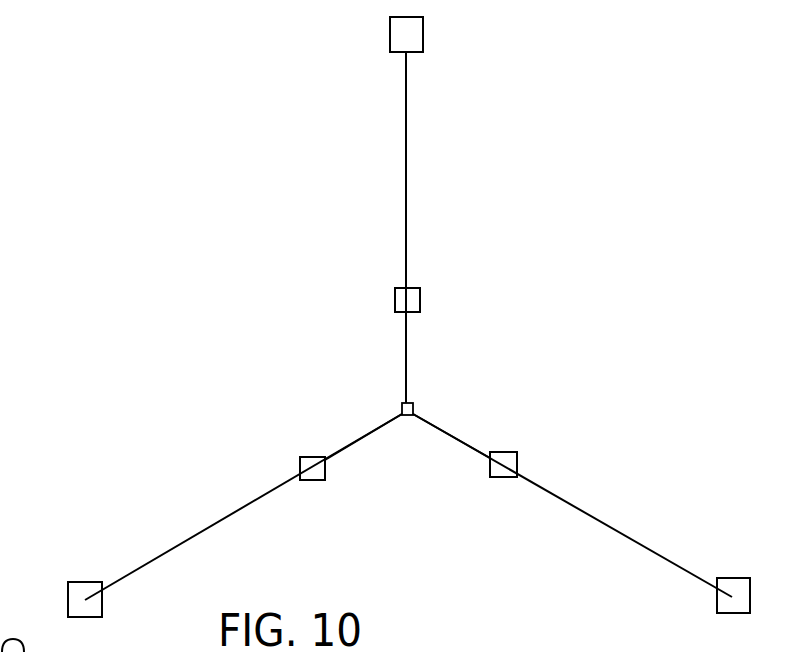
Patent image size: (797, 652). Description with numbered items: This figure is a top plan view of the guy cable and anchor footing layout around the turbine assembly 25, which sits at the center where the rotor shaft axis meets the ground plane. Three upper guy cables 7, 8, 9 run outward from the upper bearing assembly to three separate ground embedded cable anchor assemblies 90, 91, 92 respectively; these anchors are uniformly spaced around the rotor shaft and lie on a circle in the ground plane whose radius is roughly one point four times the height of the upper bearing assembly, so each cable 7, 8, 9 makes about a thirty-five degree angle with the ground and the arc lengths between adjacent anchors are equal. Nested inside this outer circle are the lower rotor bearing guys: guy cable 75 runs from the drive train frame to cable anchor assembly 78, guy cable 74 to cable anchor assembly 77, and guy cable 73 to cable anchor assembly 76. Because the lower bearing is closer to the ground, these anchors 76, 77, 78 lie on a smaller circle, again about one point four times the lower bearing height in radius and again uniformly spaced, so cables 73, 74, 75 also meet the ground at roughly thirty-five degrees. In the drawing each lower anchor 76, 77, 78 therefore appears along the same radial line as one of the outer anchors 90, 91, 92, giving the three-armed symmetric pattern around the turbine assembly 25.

The guy cable 7 is at (406, 164).
The guy cable 8 is at (218, 523).
The guy cable 9 is at (572, 502).
The turbine assembly 25 is at (372, 393).
The guy cable 73 is at (406, 355).
The guy cable 74 is at (353, 442).
The guy cable 75 is at (452, 437).
The cable anchor assembly 76 is at (441, 288).
The cable anchor assembly 77 is at (331, 488).
The cable anchor assembly 78 is at (530, 447).
The cable anchor assembly 90 is at (388, 43).
The cable anchor assembly 91 is at (78, 579).
The cable anchor assembly 92 is at (714, 605).